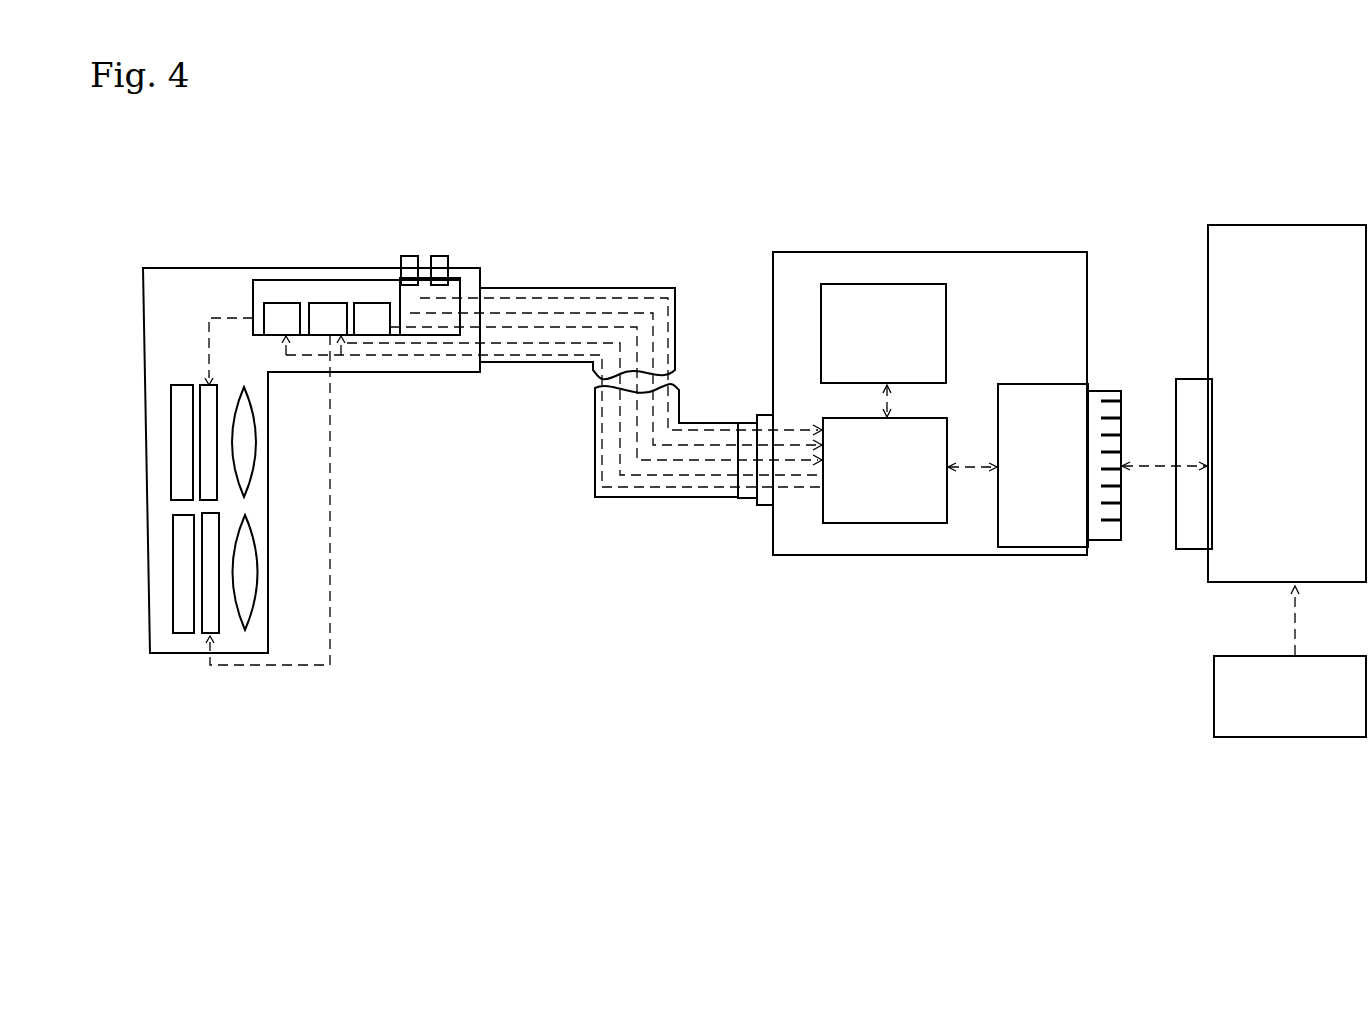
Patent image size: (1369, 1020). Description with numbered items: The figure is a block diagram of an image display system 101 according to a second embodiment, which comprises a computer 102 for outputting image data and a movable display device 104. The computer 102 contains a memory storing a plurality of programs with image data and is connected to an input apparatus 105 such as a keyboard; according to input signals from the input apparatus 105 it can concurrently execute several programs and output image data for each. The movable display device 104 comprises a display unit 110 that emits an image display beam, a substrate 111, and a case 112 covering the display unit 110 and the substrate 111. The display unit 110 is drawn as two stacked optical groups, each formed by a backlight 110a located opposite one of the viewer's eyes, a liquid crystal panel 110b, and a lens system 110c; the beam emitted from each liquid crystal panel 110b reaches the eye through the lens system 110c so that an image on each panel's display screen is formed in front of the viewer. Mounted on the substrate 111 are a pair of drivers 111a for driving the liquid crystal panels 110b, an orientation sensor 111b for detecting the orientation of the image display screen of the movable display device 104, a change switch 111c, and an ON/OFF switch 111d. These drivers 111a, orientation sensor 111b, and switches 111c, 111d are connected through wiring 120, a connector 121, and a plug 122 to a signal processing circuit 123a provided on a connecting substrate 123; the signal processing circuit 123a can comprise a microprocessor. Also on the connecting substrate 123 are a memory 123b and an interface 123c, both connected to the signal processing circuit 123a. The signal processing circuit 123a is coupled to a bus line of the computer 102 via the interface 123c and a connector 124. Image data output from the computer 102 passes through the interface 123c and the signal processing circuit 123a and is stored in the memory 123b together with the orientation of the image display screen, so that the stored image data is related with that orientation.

The image display system 101 is at (459, 299).
The computer 102 is at (1229, 565).
The movable display device 104 is at (168, 287).
The input apparatus 105 is at (1238, 706).
The display unit 110 is at (285, 571).
The backlights 110a is at (182, 488).
The liquid crystal panels 110b is at (210, 457).
The lens systems 110c is at (238, 400).
The substrate 111 is at (328, 423).
The drivers 111a is at (290, 310).
The orientation sensor 111b is at (367, 317).
The change switch 111c is at (405, 277).
The ON/OFF switch 111d is at (438, 275).
The case 112 is at (223, 267).
The wiring 120 is at (598, 287).
The connector 121 is at (747, 498).
The plug 122 is at (767, 507).
The connecting substrate 123 is at (990, 406).
The signal processing circuit 123a is at (933, 505).
The memory 123b is at (863, 302).
The interface 123c is at (1057, 525).
The connector 124 is at (1189, 529).